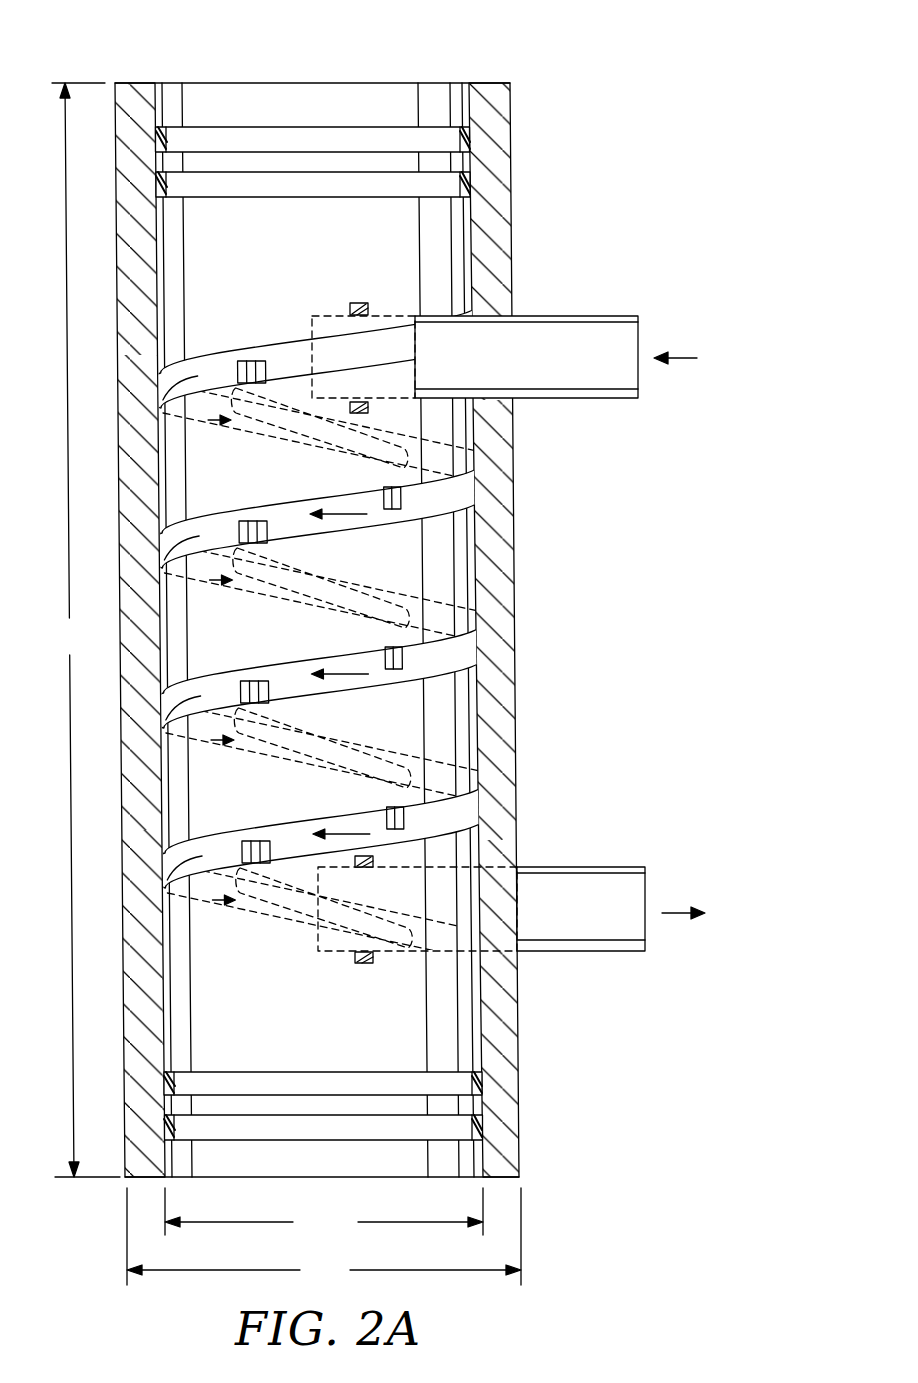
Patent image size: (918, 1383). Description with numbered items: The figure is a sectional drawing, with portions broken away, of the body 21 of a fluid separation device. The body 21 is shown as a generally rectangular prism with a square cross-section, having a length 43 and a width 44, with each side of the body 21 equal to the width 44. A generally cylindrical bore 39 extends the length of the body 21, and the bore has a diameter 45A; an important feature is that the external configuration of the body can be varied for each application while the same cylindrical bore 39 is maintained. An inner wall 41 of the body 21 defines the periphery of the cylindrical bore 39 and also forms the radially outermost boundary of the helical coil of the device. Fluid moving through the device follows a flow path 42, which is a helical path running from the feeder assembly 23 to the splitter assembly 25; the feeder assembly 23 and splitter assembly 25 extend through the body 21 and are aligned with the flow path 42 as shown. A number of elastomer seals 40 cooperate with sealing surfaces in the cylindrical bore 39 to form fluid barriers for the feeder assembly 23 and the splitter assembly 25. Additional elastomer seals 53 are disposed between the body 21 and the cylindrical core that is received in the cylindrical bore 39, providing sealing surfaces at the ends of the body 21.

The cylindrical bore 39 is at (226, 61).
The body 21 is at (507, 232).
The inner wall 41 is at (159, 278).
The elastomer seals 53 is at (472, 183).
The flow path 42 is at (243, 498).
The elastomer seals 40 is at (361, 400).
The feeder assembly 23 is at (562, 316).
The splitter assembly 25 is at (565, 867).
The length 43 is at (85, 630).
The width 44 is at (324, 1238).
The diameter 45A is at (324, 1214).